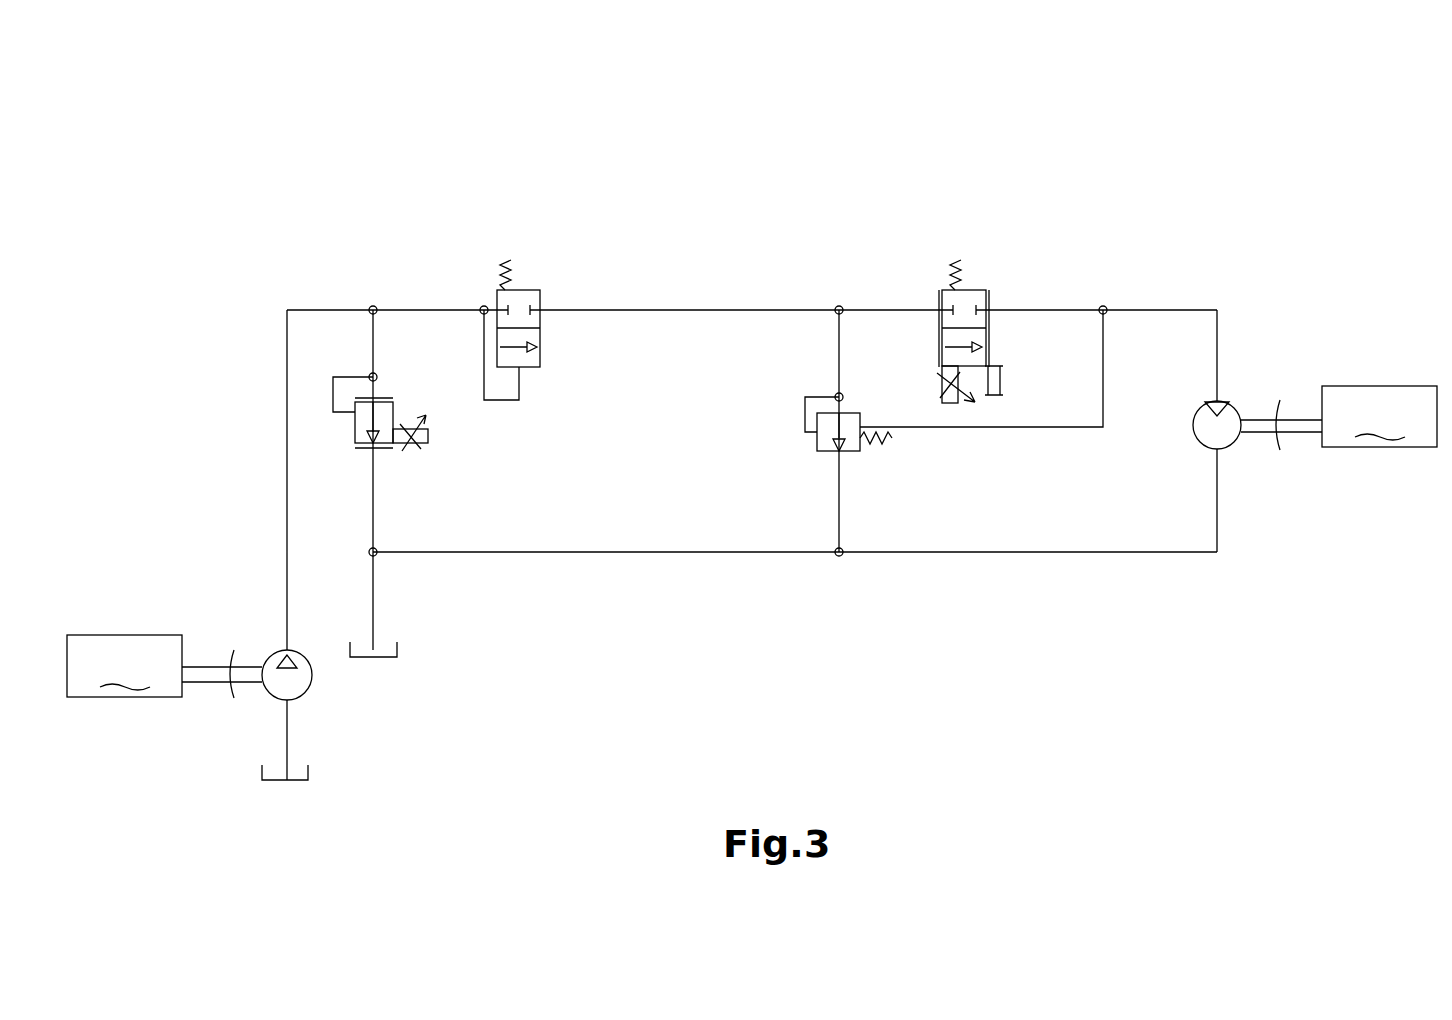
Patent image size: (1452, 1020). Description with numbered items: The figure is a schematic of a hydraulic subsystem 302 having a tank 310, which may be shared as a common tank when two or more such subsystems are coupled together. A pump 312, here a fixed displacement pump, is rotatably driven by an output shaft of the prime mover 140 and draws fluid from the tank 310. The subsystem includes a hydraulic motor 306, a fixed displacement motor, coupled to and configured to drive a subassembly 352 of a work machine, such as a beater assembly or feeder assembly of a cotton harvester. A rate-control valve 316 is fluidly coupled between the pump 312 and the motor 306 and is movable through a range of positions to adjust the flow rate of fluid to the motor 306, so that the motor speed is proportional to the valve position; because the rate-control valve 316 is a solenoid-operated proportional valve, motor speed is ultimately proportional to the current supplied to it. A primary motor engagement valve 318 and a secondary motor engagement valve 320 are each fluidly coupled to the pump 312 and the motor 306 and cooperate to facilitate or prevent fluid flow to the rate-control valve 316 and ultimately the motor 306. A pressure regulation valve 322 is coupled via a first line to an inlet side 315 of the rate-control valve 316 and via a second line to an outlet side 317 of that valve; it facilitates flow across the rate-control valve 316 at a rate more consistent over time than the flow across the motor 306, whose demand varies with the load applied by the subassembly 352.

The hydraulic subsystem 302 is at (1118, 162).
The prime mover 140 is at (164, 666).
The pump 312 is at (266, 655).
The tank 310 is at (275, 782).
The primary motor engagement valve 318 is at (423, 445).
The secondary motor engagement valve 320 is at (532, 290).
The rate-control valve 316 is at (978, 290).
The inlet side 315 is at (938, 310).
The outlet side 317 is at (990, 310).
The pressure regulation valve 322 is at (817, 443).
The hydraulic motor 306 is at (1200, 443).
The subassembly 352 is at (1339, 418).